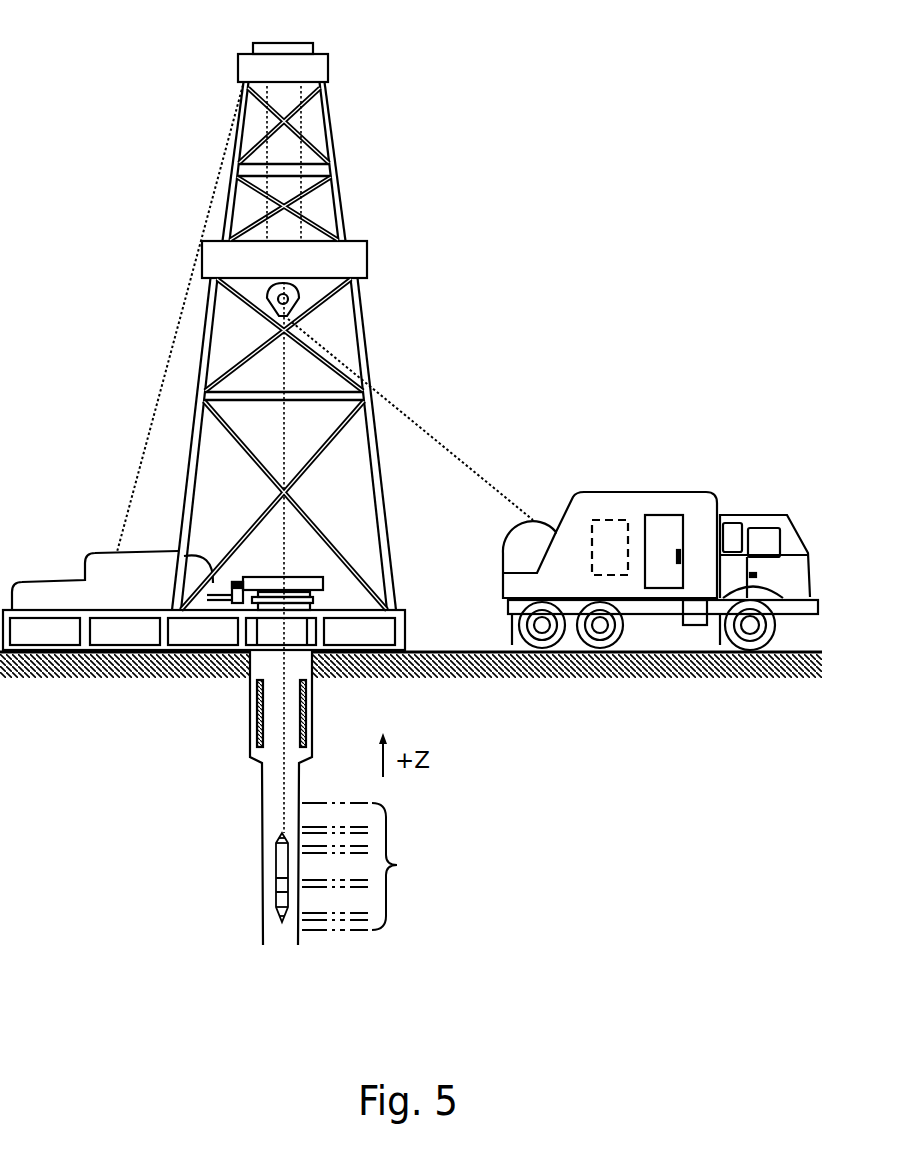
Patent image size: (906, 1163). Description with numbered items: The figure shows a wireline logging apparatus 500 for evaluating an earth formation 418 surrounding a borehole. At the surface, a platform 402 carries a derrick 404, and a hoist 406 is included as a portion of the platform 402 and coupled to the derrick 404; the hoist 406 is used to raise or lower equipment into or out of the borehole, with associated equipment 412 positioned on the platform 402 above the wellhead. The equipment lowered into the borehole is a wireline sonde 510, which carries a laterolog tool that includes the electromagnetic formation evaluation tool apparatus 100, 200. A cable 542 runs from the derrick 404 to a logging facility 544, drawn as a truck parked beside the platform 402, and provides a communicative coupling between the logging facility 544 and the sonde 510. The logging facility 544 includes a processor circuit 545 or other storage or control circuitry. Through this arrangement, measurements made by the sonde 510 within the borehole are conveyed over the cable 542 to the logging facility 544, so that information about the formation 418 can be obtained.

The drilling system 500 is at (105, 90).
The derrick 404 is at (393, 575).
The hoist 406 is at (300, 295).
The cable 542 is at (422, 427).
The drawworks / wellhead equipment 412 is at (303, 577).
The platform 402 is at (405, 630).
The logging facility 544 is at (672, 515).
The processor circuit 545 is at (599, 520).
The wireline sonde 510 is at (276, 868).
The electromagnetic formation evaluation tool apparatus 100 is at (275, 887).
The electromagnetic formation evaluation tool apparatus 200 is at (275, 887).
The formation 418 is at (372, 866).